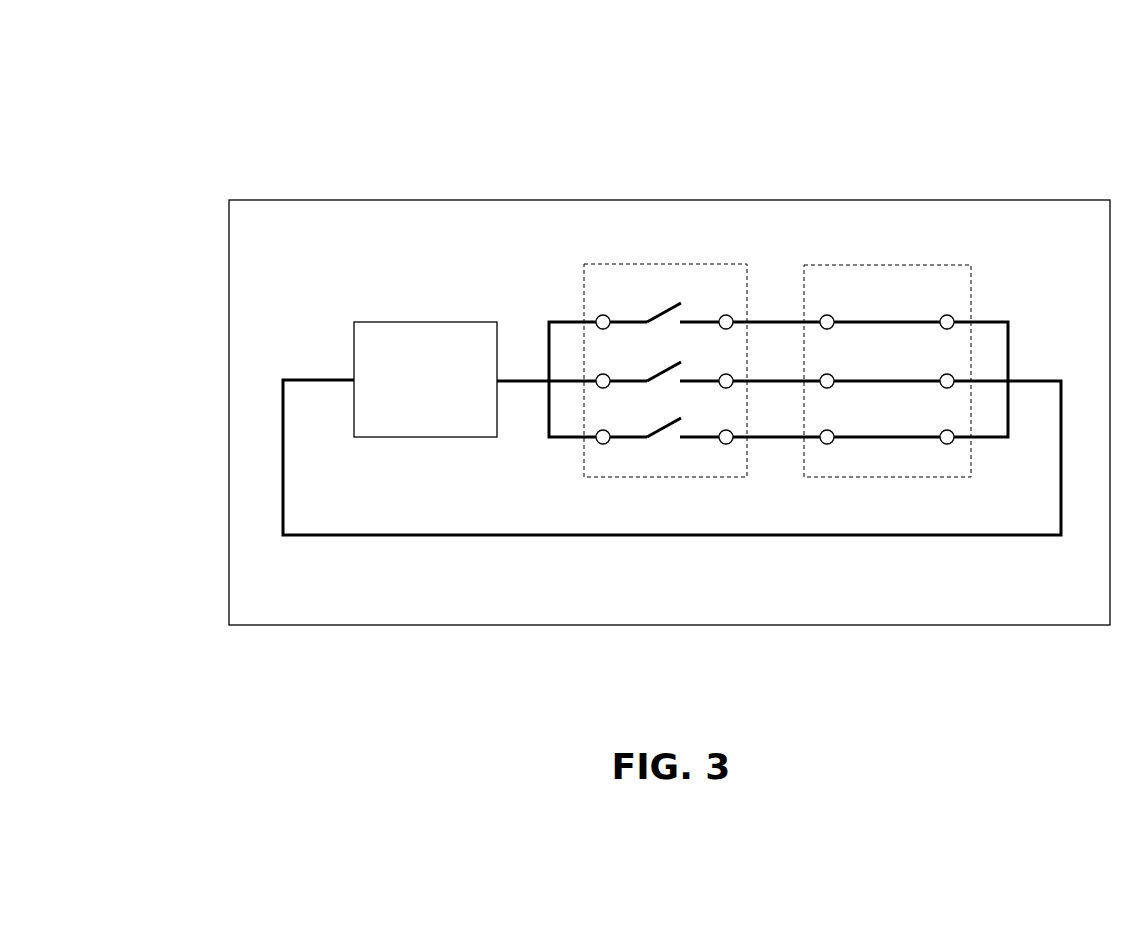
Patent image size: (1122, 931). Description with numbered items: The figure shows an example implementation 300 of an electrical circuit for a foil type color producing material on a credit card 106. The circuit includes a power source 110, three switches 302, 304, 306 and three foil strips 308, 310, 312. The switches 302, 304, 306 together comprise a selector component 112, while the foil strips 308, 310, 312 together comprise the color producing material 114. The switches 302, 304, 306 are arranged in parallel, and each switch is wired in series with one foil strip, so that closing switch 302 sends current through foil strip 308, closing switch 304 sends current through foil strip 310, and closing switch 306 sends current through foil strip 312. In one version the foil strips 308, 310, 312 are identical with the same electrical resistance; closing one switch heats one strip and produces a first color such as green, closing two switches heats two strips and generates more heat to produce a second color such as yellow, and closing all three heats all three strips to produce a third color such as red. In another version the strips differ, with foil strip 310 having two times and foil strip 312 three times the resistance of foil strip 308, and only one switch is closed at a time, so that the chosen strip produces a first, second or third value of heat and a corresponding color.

The example implementation 300 is at (122, 50).
The credit card 106 is at (287, 200).
The power source 110 is at (425, 379).
The selector component 112 is at (641, 265).
The color producing material 114 is at (862, 265).
The switch 302 is at (664, 308).
The switch 304 is at (664, 368).
The switch 306 is at (664, 426).
The foil strip 308 is at (887, 311).
The foil strip 310 is at (887, 370).
The foil strip 312 is at (887, 427).